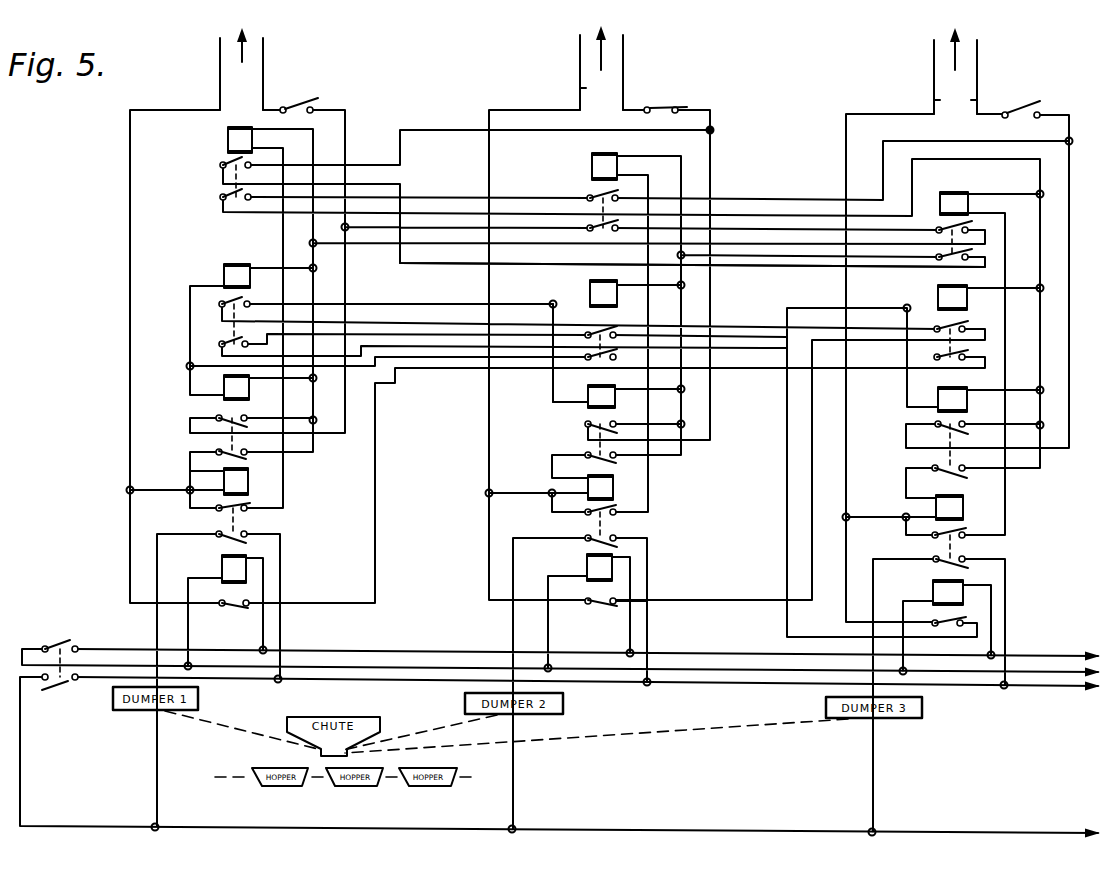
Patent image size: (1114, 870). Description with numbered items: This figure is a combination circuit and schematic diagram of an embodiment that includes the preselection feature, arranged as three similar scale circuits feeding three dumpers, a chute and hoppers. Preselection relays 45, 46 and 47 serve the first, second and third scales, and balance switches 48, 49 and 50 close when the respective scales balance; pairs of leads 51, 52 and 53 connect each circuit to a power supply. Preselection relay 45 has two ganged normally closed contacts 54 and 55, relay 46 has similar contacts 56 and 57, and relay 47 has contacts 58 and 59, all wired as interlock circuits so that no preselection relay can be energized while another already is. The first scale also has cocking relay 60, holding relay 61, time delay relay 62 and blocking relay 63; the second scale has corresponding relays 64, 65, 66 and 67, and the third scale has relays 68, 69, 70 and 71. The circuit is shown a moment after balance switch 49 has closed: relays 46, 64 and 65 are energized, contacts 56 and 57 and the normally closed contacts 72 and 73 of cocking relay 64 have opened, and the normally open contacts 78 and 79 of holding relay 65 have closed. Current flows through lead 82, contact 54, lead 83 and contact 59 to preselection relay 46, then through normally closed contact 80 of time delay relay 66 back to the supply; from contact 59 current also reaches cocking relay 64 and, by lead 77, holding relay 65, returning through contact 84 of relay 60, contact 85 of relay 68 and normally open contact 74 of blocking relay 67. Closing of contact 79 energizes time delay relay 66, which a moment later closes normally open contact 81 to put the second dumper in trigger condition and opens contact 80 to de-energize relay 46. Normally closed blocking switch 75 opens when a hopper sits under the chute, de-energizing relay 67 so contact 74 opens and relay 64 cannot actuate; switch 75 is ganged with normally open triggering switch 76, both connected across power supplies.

The preselection relay 45 is at (228, 143).
The preselection relay 46 is at (592, 158).
The preselection relay 47 is at (940, 198).
The balance switch 48 is at (293, 103).
The balance switch 49 is at (665, 103).
The balance switch 50 is at (1025, 104).
The pair of leads 51 is at (241, 69).
The pair of leads 52 is at (601, 71).
The pair of leads 53 is at (955, 72).
The normally closed contact 54 is at (222, 163).
The normally closed contact 55 is at (222, 197).
The normally closed contact 56 is at (598, 193).
The normally closed contact 57 is at (598, 226).
The normally closed contact 58 is at (972, 222).
The normally closed contact 59 is at (972, 251).
The cocking relay 60 is at (232, 264).
The holding relay 61 is at (226, 390).
The time delay relay 62 is at (257, 484).
The blocking relay 63 is at (222, 560).
The cocking relay 64 is at (590, 285).
The holding relay 65 is at (588, 395).
The time delay relay 66 is at (600, 490).
The blocking relay 67 is at (587, 560).
The cocking relay 68 is at (938, 290).
The holding relay 69 is at (938, 395).
The time delay relay 70 is at (940, 505).
The blocking relay 71 is at (935, 588).
The normally closed contact 72 is at (617, 330).
The normally closed contact 73 is at (616, 352).
The normally open contact 74 is at (600, 607).
The blocking switch 75 is at (53, 647).
The triggering switch 76 is at (70, 684).
The lead 77 is at (553, 398).
The holding contact 78 is at (604, 422).
The normally open contact 79 is at (615, 464).
The normally closed contact 80 is at (614, 507).
The normally open contact 81 is at (618, 541).
The lead 82 is at (659, 133).
The lead 83 is at (446, 268).
The normally closed contact 84 is at (243, 300).
The normally closed contact 85 is at (968, 326).